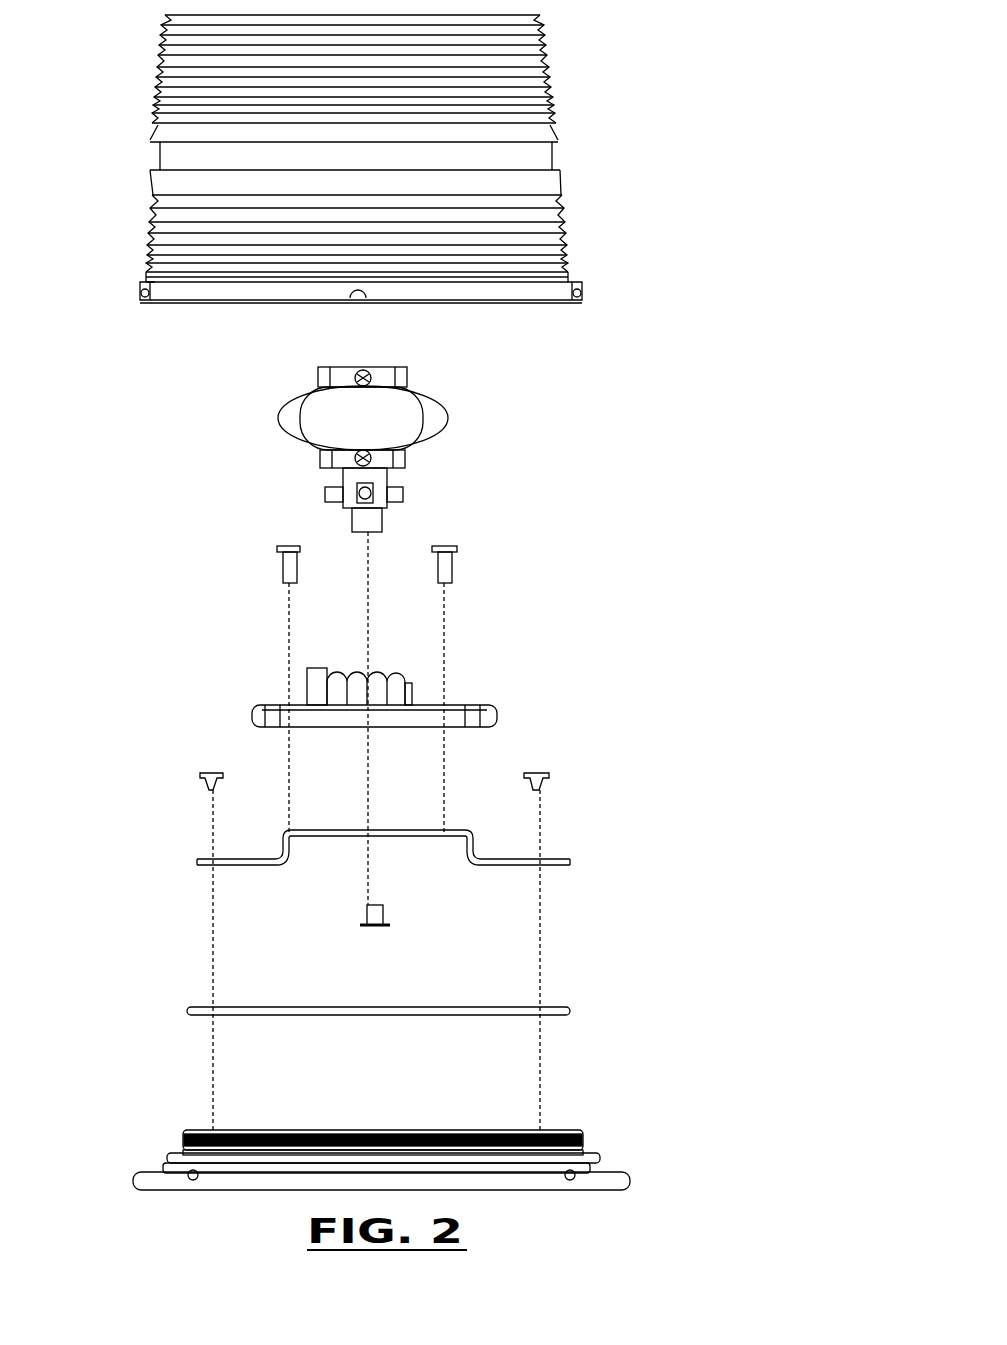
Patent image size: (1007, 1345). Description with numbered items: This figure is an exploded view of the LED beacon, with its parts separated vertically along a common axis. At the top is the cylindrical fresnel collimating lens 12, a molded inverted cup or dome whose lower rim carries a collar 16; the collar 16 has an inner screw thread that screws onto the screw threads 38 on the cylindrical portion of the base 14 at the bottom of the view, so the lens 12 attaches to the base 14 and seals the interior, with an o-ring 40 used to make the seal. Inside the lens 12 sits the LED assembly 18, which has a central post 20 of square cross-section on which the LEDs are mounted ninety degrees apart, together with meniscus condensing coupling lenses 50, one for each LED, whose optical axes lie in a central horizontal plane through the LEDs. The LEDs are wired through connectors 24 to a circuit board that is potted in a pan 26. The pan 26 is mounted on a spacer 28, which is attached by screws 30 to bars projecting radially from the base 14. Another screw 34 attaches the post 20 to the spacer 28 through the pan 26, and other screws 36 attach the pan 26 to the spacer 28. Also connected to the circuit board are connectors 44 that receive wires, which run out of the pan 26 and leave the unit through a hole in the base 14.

The cylindrical fresnel collimating lens 12 is at (556, 130).
The base 14 is at (585, 1180).
The collar 16 is at (540, 287).
The LED assembly 18 is at (400, 375).
The central post 20 is at (365, 520).
The connectors 24 is at (400, 493).
The pan 26 is at (440, 716).
The spacer 28 is at (550, 862).
The screws 30 is at (205, 776).
The screw 34 is at (365, 928).
The screws 36 is at (287, 564).
The screw threads 38 is at (583, 1133).
The o-ring 40 is at (560, 1011).
The connectors 44 is at (307, 685).
The meniscus condensing coupling lenses 50 is at (285, 415).